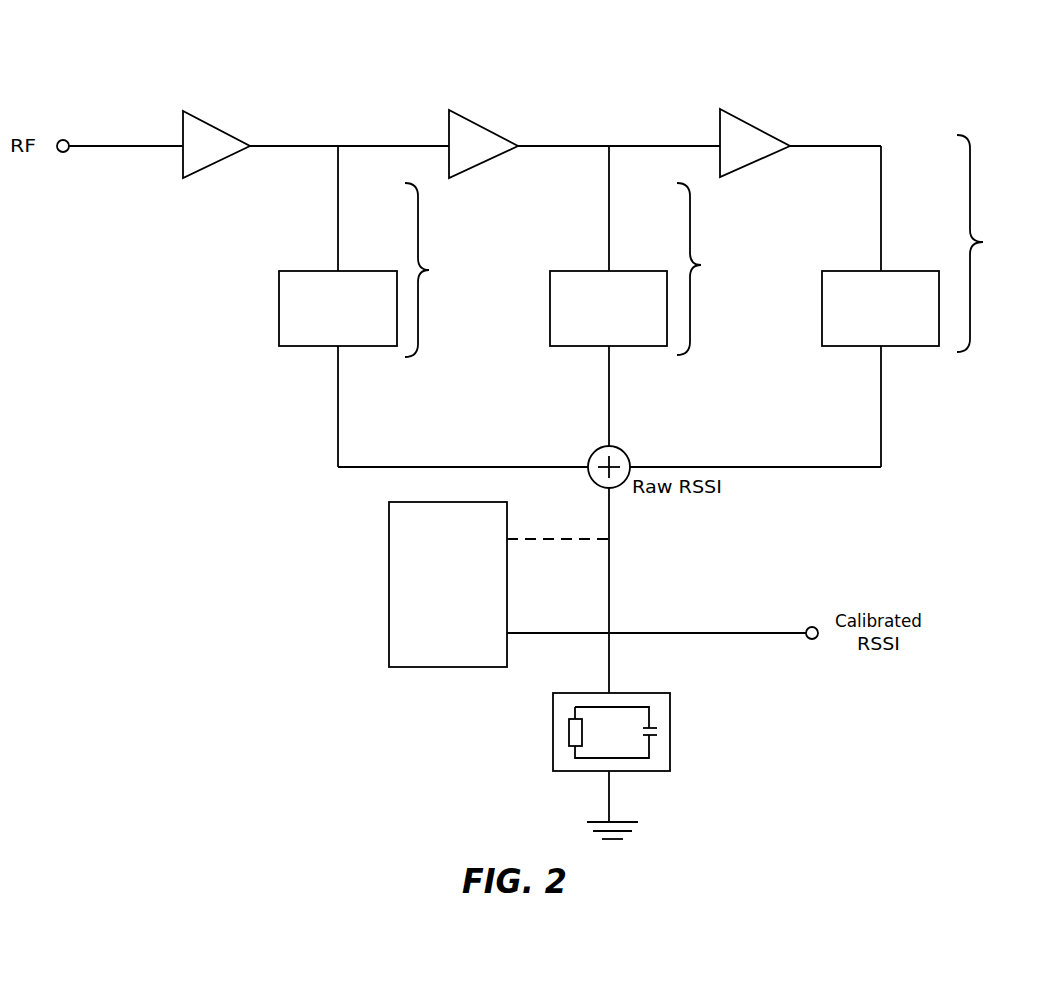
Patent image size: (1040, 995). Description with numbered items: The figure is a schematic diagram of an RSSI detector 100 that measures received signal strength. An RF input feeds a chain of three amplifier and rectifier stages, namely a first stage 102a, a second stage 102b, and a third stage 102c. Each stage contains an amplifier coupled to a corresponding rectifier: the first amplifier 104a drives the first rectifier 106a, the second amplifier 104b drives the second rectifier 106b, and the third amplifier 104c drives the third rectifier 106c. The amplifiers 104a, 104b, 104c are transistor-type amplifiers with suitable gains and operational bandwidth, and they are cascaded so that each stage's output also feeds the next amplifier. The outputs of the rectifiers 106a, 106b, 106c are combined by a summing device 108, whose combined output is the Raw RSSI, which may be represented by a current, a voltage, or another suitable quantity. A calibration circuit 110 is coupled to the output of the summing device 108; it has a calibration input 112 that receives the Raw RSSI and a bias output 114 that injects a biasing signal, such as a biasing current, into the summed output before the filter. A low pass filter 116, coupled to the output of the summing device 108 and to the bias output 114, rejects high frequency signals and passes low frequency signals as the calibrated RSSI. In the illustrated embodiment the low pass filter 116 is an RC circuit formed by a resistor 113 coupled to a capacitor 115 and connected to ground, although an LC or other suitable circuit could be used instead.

The RSSI detector 100 is at (921, 92).
The first stage 102a is at (442, 270).
The second stage 102b is at (715, 269).
The third stage 102c is at (995, 243).
The first amplifier 104a is at (216, 124).
The second amplifier 104b is at (483, 123).
The third amplifier 104c is at (750, 122).
The first rectifier 106a is at (279, 313).
The second rectifier 106b is at (550, 313).
The third rectifier 106c is at (822, 312).
The summing device 108 is at (626, 450).
The calibration circuit 110 is at (389, 524).
The calibration input 112 is at (520, 539).
The resistor 113 is at (569, 742).
The bias output 114 is at (578, 634).
The capacitor 115 is at (655, 728).
The low pass filter 116 is at (601, 707).